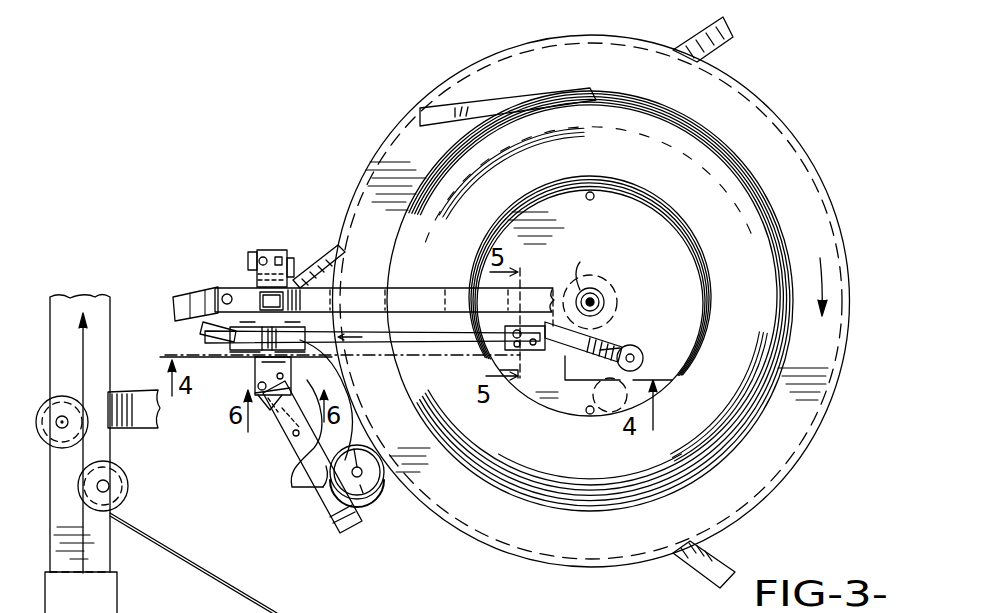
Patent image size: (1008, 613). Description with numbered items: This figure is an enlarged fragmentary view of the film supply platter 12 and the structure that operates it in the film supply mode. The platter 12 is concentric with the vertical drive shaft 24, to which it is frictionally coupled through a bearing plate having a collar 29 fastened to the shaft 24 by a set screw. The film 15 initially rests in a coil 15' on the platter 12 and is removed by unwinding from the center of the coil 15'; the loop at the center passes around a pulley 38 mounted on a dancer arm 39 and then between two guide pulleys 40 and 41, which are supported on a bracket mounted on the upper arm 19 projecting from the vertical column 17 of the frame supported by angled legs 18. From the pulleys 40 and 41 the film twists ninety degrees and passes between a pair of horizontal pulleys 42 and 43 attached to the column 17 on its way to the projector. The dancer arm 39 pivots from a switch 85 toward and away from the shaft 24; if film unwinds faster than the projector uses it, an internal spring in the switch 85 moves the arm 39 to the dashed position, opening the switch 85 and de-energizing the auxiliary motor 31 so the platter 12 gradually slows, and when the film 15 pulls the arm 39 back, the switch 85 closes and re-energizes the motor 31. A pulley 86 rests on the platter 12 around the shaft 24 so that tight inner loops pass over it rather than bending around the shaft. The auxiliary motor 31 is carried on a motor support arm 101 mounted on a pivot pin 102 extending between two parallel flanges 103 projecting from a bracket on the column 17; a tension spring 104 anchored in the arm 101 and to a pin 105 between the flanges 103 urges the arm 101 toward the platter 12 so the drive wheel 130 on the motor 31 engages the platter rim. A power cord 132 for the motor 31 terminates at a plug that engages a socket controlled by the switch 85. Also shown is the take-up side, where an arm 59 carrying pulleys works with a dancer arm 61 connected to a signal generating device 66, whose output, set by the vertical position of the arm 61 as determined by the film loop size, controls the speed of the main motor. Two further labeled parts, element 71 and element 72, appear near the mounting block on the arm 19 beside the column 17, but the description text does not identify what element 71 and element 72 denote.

The platter 12 is at (483, 543).
The film 15 is at (590, 301).
The coil 15' is at (590, 495).
The column 17 is at (262, 294).
The angled legs 18 is at (710, 30).
The arm 19 is at (435, 308).
The drive shaft 24 is at (600, 302).
The collar 29 is at (610, 280).
The auxiliary motor 31 is at (371, 495).
The pulley 38 is at (640, 348).
The dancer arm 39 is at (580, 350).
The guide pulley 40 is at (470, 330).
The guide pulley 41 is at (505, 346).
The horizontal pulley 42 is at (300, 345).
The horizontal pulley 43 is at (50, 404).
The arm 59 is at (188, 292).
The dancer arm 61 is at (208, 336).
The signal generating device 66 is at (256, 368).
The block 71 is at (258, 252).
The arm 72 is at (300, 268).
The switch 85 is at (553, 290).
The pulley 86 is at (586, 250).
The motor support arm 101 is at (340, 528).
The pivot pin 102 is at (256, 390).
The flanges 103 is at (264, 418).
The tension spring 104 is at (282, 438).
The pin 105 is at (340, 385).
The drive wheel 130 is at (360, 500).
The power cord 132 is at (298, 488).